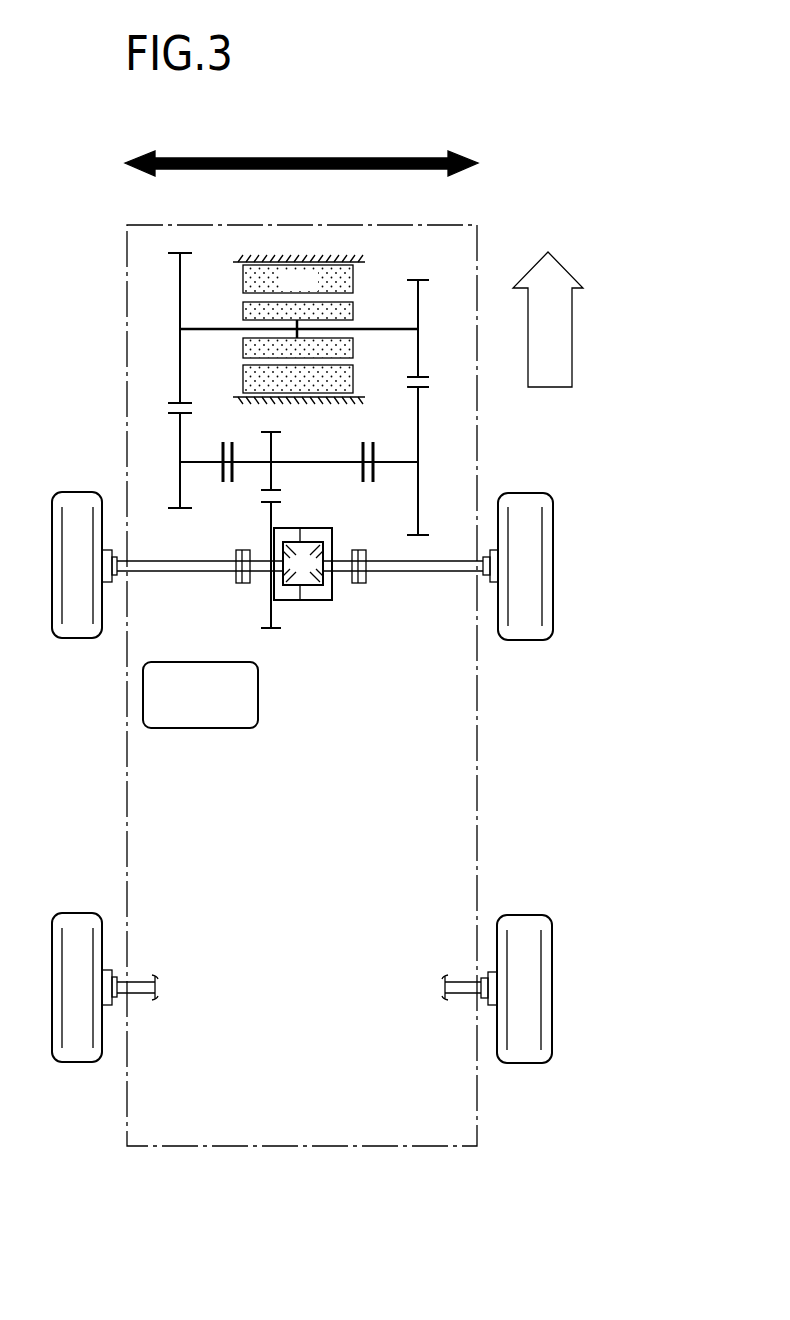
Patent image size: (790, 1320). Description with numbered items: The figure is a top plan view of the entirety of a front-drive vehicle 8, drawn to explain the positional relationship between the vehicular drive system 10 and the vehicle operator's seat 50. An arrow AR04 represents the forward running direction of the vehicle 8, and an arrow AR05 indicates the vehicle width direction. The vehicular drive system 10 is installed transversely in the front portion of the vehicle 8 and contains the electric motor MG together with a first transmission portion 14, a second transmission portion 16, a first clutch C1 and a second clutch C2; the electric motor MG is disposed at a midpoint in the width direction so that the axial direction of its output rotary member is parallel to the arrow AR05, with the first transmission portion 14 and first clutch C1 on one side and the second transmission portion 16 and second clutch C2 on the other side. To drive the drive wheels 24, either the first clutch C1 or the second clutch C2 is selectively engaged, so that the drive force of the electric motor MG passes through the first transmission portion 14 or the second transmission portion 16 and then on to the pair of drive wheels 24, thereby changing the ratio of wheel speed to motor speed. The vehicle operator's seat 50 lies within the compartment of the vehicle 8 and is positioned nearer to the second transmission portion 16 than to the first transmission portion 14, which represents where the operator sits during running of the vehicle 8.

The vehicle 8 is at (513, 172).
The vehicular drive system 10 is at (396, 244).
The first transmission portion 14 is at (429, 362).
The second transmission portion 16 is at (171, 358).
The drive wheels 24 is at (76, 497).
The vehicle operator's seat 50 is at (190, 661).
The arrow representing the forward running direction AR04 is at (572, 318).
The arrow representing the vehicle width direction AR05 is at (407, 157).
The first clutch C1 is at (369, 438).
The second clutch C2 is at (226, 438).
The electric motor MG is at (299, 329).